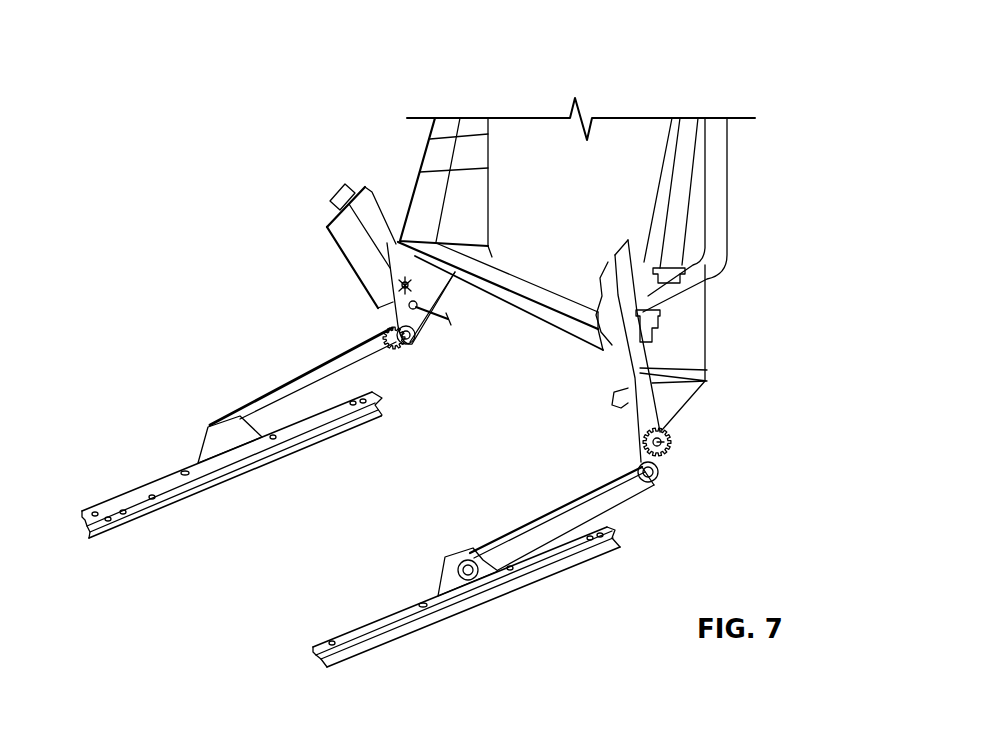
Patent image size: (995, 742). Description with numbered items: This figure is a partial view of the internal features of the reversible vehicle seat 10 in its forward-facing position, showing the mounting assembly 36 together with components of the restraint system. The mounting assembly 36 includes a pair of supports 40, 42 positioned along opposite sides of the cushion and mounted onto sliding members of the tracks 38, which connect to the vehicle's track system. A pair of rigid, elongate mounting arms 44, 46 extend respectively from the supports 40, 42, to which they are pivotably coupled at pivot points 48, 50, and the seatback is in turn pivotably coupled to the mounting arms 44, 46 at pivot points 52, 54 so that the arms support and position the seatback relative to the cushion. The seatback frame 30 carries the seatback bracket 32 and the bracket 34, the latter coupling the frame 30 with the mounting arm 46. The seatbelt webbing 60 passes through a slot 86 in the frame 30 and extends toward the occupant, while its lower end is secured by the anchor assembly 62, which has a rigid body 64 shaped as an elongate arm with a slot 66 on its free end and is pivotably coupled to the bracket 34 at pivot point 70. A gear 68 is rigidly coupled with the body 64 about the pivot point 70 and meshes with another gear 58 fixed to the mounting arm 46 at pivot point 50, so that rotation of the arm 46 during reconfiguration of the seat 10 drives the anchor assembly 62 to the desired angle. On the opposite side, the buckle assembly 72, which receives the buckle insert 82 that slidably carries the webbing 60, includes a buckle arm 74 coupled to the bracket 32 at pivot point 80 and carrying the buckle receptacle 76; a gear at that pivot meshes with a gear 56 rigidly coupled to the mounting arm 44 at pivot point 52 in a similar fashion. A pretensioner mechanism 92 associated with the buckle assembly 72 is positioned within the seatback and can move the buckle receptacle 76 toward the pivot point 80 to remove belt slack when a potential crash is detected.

The seat 10 is at (786, 92).
The seatback frame 30 is at (478, 200).
The seatback bracket 32 is at (442, 277).
The bracket 34 is at (683, 390).
The mounting assembly 36 is at (308, 534).
The tracks 38 is at (118, 498).
The support 40 is at (212, 458).
The support 42 is at (447, 590).
The mounting arm 44 is at (316, 385).
The mounting arm 46 is at (532, 535).
The pivot point 48 is at (228, 438).
The pivot point 50 is at (478, 574).
The pivot point 52 is at (417, 342).
The pivot point 54 is at (651, 487).
The gear 56 is at (393, 350).
The gear 58 is at (662, 470).
The seatbelt webbing 60 is at (712, 262).
The anchor assembly 62 is at (626, 448).
The body 64 is at (643, 418).
The slot 66 is at (616, 397).
The gear 68 is at (667, 427).
The pivot point 70 is at (665, 443).
The buckle assembly 72 is at (378, 174).
The buckle arm 74 is at (354, 260).
The buckle receptacle 76 is at (343, 190).
The pivot point 80 is at (427, 318).
The buckle insert 82 is at (660, 322).
The slot 86 is at (685, 257).
The pretensioner mechanism 92 is at (449, 302).